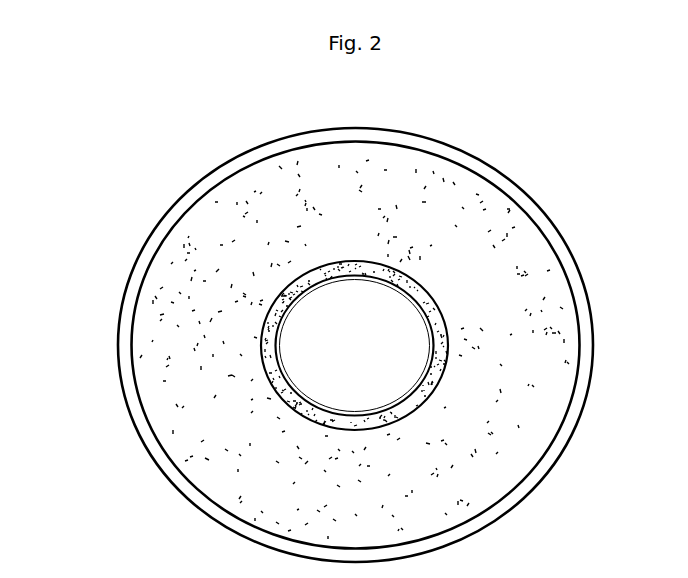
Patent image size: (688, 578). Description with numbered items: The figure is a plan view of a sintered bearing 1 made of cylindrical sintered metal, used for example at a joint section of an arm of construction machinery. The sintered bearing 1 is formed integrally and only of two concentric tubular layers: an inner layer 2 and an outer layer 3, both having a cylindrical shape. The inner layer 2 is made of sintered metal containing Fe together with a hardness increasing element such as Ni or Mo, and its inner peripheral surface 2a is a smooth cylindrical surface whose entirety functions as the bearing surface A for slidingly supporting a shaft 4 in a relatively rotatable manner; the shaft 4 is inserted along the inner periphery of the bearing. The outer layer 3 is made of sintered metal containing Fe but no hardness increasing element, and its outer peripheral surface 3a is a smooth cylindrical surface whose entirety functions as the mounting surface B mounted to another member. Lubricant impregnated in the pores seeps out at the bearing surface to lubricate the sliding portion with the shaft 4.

The sintered bearing 1 is at (328, 331).
The inner layer 2 is at (275, 280).
The inner peripheral surface of the inner layer 2a is at (267, 393).
The outer layer 3 is at (549, 310).
The outer peripheral surface of the outer layer 3a is at (143, 245).
The shaft 4 is at (392, 280).